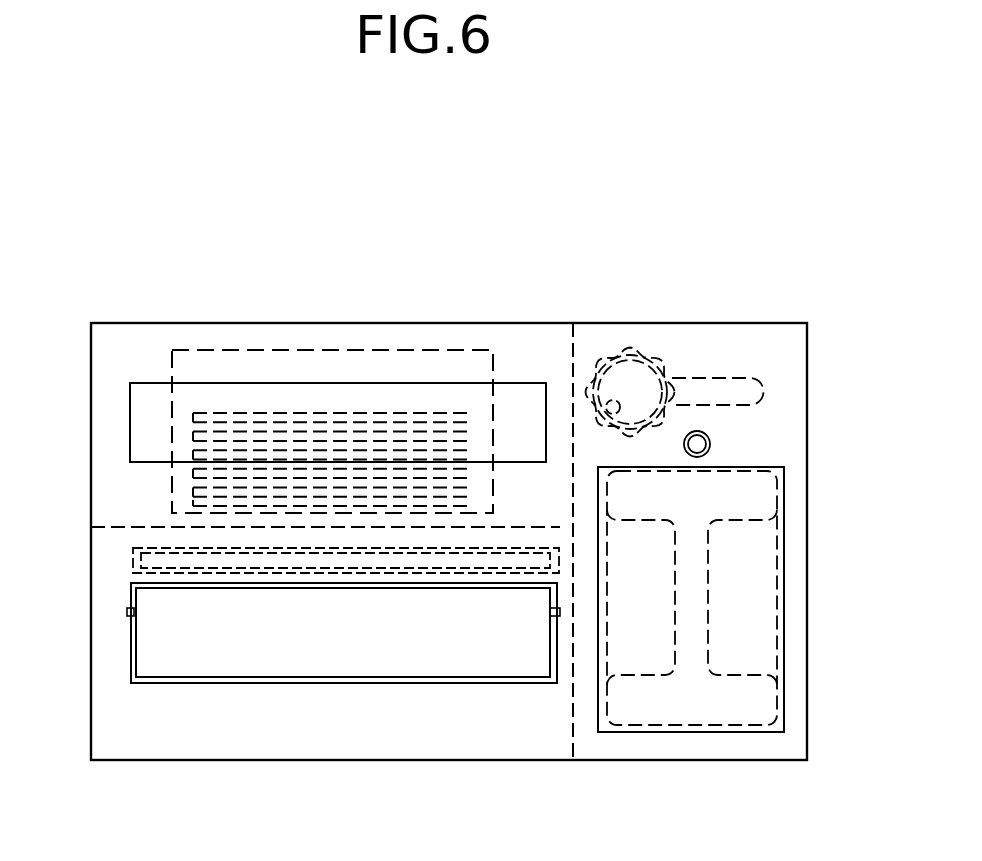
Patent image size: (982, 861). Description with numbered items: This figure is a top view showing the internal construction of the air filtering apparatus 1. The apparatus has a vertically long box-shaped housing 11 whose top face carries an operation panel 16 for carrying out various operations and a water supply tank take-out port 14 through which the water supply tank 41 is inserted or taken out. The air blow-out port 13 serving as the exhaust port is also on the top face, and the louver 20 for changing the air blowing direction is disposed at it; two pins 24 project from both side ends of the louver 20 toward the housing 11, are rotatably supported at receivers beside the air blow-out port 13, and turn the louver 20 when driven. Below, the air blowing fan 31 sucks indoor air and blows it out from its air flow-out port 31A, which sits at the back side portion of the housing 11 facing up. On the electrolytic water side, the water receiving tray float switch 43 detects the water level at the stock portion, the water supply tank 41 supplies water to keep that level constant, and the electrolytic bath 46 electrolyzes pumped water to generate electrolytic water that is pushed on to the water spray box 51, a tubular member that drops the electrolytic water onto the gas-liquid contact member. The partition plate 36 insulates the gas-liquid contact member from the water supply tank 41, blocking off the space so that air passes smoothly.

The air filtering apparatus 1 is at (793, 150).
The housing 11 is at (787, 323).
The air blow-out port 13 is at (131, 668).
The water supply tank take-out port 14 is at (784, 618).
The operation panel 16 is at (152, 383).
The louver 20 is at (260, 652).
The pin 24 is at (128, 613).
The air blowing fan 31 is at (420, 348).
The air flow-out port 31A is at (303, 412).
The partition plate 36 is at (572, 372).
The water supply tank 41 is at (760, 578).
The water receiving tray float switch 43 is at (710, 444).
The electrolytic bath 46 is at (645, 348).
The water spray box 51 is at (133, 562).